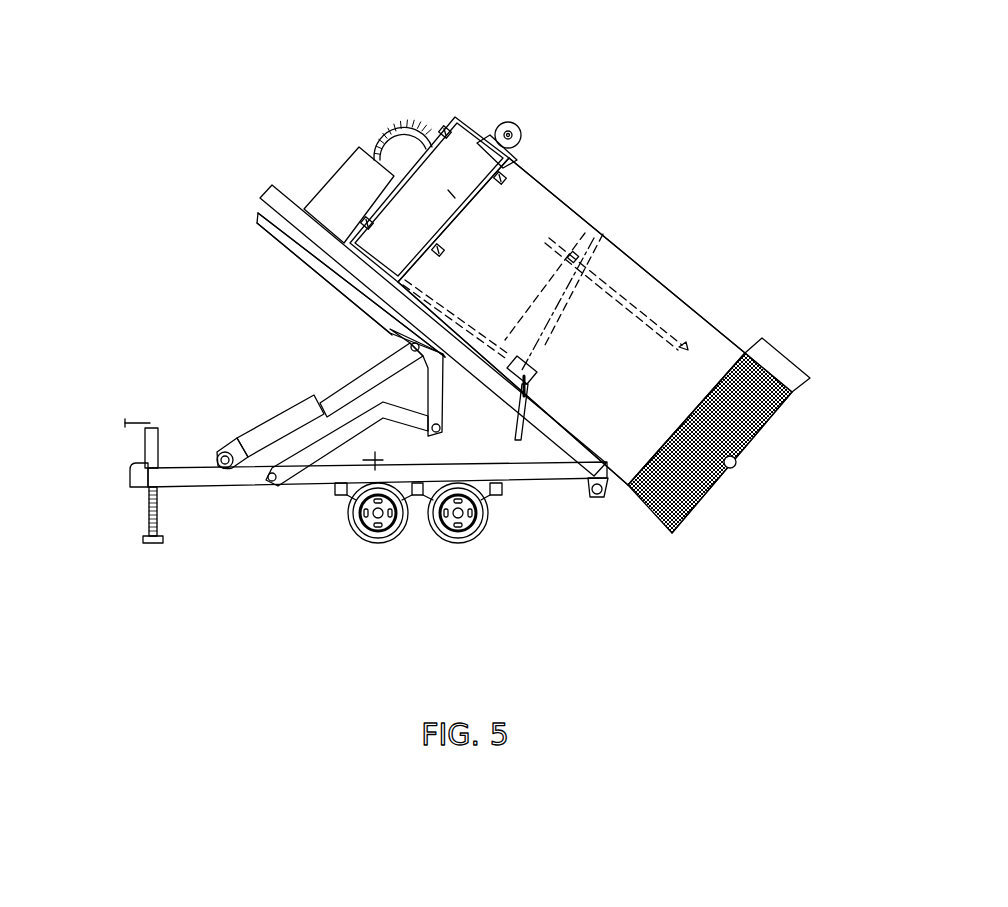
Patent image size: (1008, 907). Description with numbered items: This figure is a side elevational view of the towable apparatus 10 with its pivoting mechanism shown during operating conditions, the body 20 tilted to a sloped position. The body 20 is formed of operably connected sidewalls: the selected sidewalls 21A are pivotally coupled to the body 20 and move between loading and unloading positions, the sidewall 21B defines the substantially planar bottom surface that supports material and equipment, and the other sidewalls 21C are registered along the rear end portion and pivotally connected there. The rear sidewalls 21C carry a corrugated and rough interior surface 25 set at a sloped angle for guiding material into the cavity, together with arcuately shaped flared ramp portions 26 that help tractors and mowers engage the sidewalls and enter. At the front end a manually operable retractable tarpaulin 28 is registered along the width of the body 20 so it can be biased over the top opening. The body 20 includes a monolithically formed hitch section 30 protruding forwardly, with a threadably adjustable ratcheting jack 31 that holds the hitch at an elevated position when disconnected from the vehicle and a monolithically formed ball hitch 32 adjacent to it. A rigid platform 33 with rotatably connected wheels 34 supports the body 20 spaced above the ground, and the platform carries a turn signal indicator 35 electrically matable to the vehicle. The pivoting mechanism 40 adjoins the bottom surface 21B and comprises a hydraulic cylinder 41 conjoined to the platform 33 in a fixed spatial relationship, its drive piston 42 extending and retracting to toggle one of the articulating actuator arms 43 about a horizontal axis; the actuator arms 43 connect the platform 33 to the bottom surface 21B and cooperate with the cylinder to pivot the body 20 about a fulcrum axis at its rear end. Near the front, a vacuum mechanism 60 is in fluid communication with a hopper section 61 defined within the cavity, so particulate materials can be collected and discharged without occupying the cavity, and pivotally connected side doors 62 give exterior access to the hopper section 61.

The apparatus 10 is at (166, 72).
The body 20 is at (546, 347).
The selected sidewalls 21A is at (633, 273).
The bottom surface sidewall 21B is at (290, 204).
The other sidewalls 21C is at (659, 530).
The corrugated and rough interior surface 25 is at (705, 490).
The flared ramp portions 26 is at (782, 362).
The retractable tarpaulin 28 is at (521, 130).
The hitch section 30 is at (347, 487).
The ratcheting jack 31 is at (157, 428).
The ball hitch 32 is at (137, 473).
The rigid platform 33 is at (213, 480).
The wheels 34 is at (440, 524).
The turn signal indicator 35 is at (510, 372).
The pivoting mechanism 40 is at (316, 386).
The hydraulic cylinder 41 is at (248, 432).
The drive piston 42 is at (340, 386).
The actuator arms 43 is at (280, 245).
The vacuum mechanism 60 is at (368, 140).
The hopper section 61 is at (429, 163).
The side doors 62 is at (440, 163).